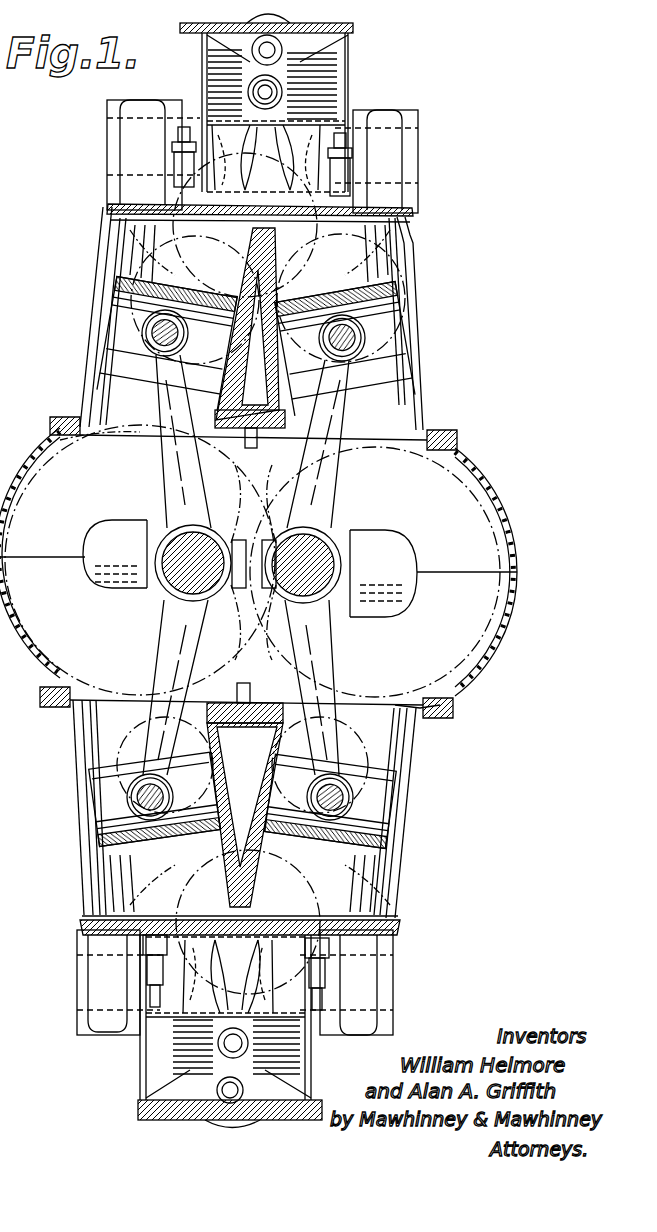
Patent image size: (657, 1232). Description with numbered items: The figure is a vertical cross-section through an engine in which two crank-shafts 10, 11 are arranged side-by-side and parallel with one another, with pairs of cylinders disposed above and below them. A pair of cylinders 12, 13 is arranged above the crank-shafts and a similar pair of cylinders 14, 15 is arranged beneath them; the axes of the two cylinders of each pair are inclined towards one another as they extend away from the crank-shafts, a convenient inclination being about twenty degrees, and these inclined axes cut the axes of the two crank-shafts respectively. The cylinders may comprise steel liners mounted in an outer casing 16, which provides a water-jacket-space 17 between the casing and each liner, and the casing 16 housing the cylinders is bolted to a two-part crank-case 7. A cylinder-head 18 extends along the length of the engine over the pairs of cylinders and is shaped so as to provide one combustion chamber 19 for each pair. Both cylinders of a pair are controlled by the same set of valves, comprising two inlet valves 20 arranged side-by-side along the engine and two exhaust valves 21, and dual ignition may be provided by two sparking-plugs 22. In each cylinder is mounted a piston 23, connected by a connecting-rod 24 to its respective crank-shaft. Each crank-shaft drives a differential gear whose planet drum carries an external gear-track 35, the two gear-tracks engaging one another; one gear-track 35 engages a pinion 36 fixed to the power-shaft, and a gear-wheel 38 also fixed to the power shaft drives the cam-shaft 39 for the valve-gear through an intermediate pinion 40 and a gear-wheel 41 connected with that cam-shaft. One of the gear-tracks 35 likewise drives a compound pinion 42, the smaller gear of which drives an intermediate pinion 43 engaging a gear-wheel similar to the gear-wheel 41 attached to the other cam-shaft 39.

The crank-case 7 is at (470, 533).
The crank-shaft 10 is at (103, 543).
The crank-shaft 11 is at (370, 537).
The cylinder 12 is at (127, 247).
The cylinder 13 is at (393, 277).
The cylinder 14 is at (97, 873).
The cylinder 15 is at (363, 883).
The outer casing 16 is at (247, 240).
The water-jacket-space 17 is at (110, 300).
The cylinder-head 18 is at (357, 193).
The combustion chamber 19 is at (143, 267).
The inlet valve 20 is at (310, 232).
The exhaust valve 21 is at (232, 233).
The sparking-plug 22 is at (173, 147).
The piston 23 is at (113, 320).
The connecting-rod 24 is at (292, 483).
The external gear-track 35 is at (95, 668).
The pinion 36 is at (137, 420).
The gear-wheel 38 is at (197, 436).
The cam-shaft 39 is at (337, 100).
The intermediate pinion 40 is at (395, 268).
The gear-wheel 41 is at (200, 90).
The compound pinion 42 is at (360, 717).
The intermediate pinion 43 is at (283, 867).